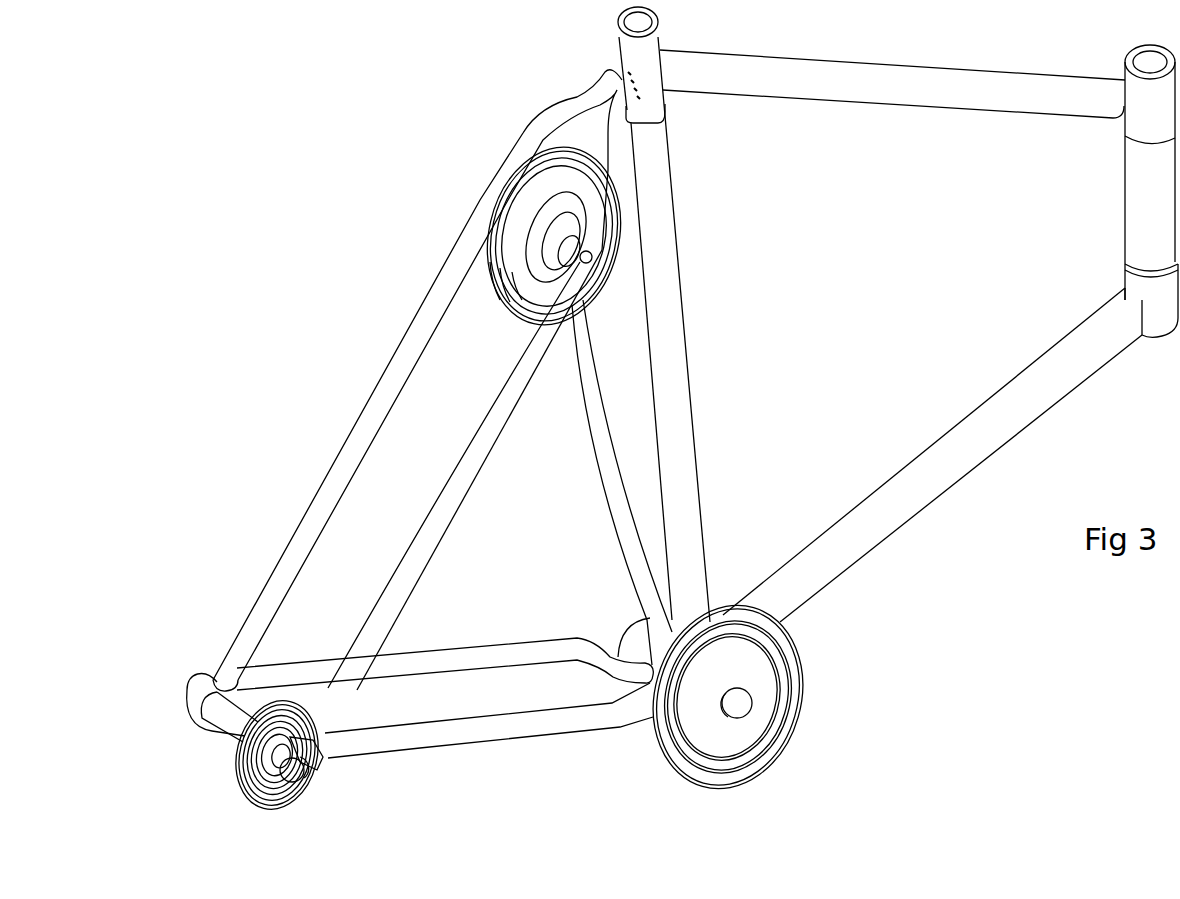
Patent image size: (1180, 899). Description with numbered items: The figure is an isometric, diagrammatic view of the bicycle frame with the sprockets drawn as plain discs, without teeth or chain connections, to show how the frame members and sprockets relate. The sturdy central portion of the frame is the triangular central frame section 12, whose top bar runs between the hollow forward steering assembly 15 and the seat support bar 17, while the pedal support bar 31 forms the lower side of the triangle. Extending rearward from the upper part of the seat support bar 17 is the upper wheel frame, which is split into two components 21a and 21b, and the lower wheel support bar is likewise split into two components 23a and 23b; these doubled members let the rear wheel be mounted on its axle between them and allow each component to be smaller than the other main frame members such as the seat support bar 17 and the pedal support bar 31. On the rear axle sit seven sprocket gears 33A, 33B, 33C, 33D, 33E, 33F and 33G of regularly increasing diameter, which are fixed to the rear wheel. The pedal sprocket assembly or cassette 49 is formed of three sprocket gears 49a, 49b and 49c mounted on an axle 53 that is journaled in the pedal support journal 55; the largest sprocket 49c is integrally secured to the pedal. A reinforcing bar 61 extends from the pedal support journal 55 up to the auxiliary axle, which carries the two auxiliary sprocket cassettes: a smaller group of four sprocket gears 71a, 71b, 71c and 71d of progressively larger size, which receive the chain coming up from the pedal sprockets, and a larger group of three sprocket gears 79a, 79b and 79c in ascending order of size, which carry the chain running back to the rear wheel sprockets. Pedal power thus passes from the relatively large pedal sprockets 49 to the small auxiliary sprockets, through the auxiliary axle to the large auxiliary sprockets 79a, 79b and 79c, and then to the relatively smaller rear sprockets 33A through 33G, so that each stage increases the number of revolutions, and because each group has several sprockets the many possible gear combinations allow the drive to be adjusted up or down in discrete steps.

The triangular central frame section 12 is at (887, 67).
The hollow forward steering assembly 15 is at (1124, 199).
The seat support bar 17 is at (680, 271).
The pedal support bar 31 is at (940, 432).
The reinforcing bar 61 is at (598, 453).
The upper wheel frame component 21a is at (354, 434).
The upper wheel frame component 21b is at (428, 512).
The lower wheel support bar component 23a is at (441, 649).
The lower wheel support bar component 23b is at (441, 721).
The pedal support journal 55 is at (621, 650).
The pedal sprocket assembly 49 is at (751, 696).
The sprocket gear 49a is at (750, 753).
The sprocket gear 49b is at (781, 727).
The sprocket gear 49c is at (804, 689).
The axle 53 is at (739, 688).
The pulley hub 71a is at (532, 310).
The pulley inner ring 71b is at (560, 260).
The pulley middle ring 71c is at (552, 231).
The pulley outer ring 71d is at (562, 208).
The auxiliary sprocket gear 79a is at (530, 308).
The auxiliary sprocket gear 79b is at (516, 300).
The auxiliary sprocket gear 79c is at (505, 268).
The sprocket gear 33A is at (293, 740).
The sprocket gear 33B is at (277, 752).
The sprocket gear 33C is at (262, 785).
The sprocket gear 33D is at (250, 787).
The sprocket gear 33E is at (244, 782).
The sprocket gear 33F is at (240, 763).
The sprocket gear 33G is at (236, 755).